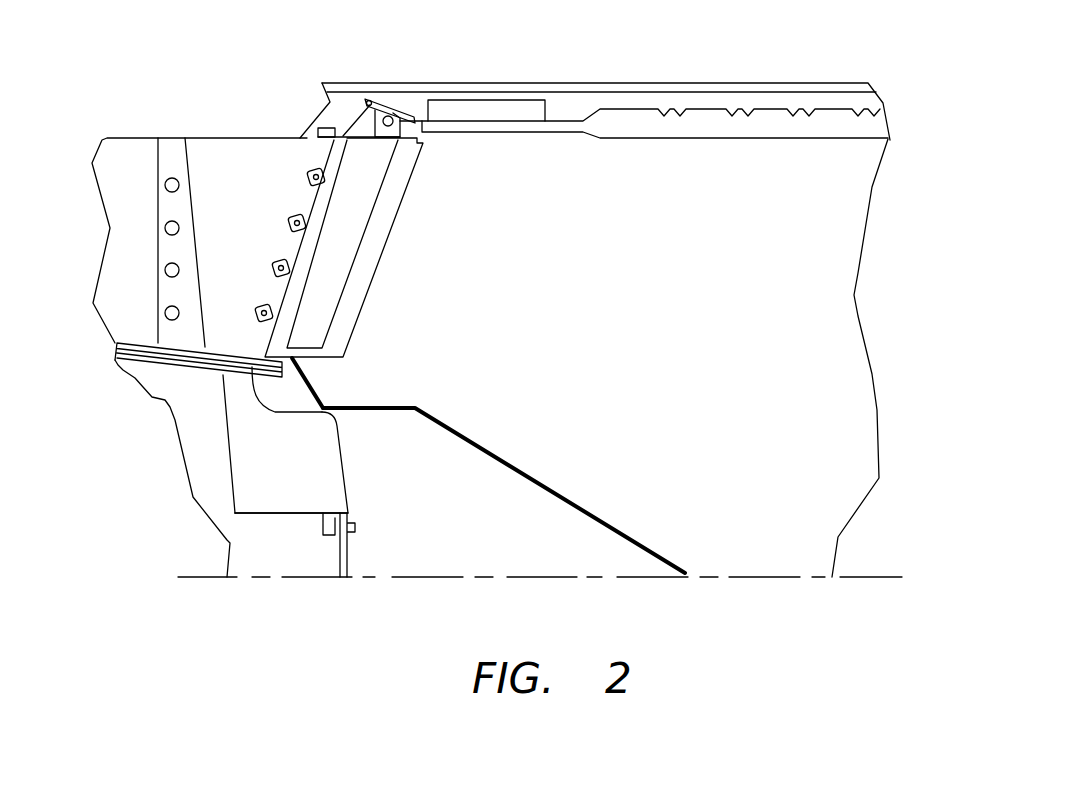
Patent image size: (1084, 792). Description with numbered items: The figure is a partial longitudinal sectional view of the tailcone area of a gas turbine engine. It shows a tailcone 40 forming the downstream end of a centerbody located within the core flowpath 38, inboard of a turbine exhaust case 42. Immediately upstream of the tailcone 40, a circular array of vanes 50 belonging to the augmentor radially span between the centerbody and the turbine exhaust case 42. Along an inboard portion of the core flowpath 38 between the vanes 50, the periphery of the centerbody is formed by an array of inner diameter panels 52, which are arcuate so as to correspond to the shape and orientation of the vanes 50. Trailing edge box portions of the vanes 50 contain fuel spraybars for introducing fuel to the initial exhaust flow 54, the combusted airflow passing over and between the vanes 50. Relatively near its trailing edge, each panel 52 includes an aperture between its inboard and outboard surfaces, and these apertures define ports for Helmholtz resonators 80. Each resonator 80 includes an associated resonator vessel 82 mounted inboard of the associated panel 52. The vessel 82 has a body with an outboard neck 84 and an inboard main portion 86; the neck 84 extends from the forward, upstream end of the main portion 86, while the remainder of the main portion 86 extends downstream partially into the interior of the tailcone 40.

The core flowpath 38 is at (327, 142).
The tailcone 40 is at (518, 467).
The turbine exhaust case 42 is at (372, 103).
The vanes 50 is at (324, 228).
The inner diameter (ID) panels 52 is at (296, 363).
The initial exhaust flow 54 is at (826, 230).
The Helmholtz resonator 80 is at (354, 472).
The resonator vessel 82 is at (254, 462).
The outboard neck 84 is at (238, 396).
The inboard main portion 86 is at (275, 488).